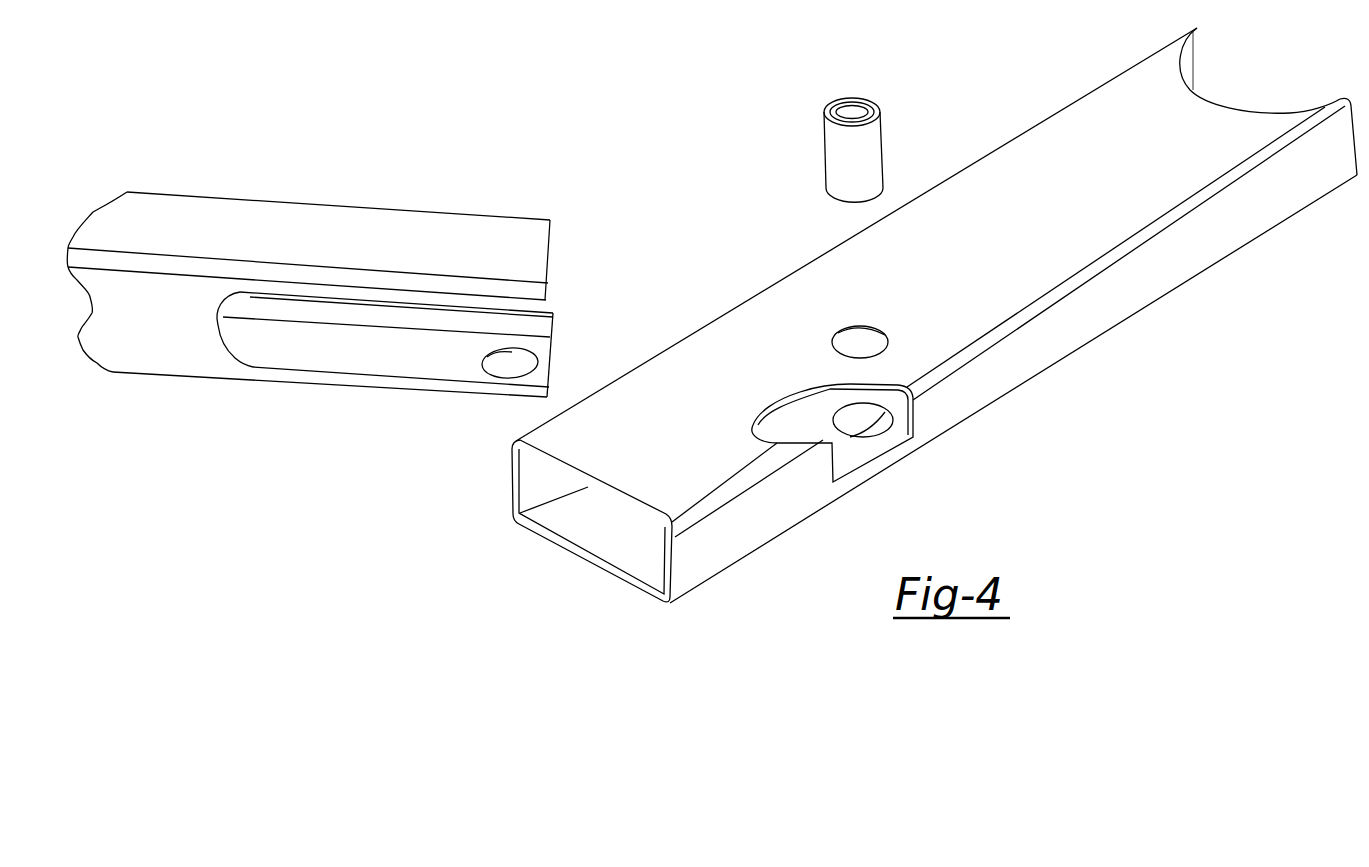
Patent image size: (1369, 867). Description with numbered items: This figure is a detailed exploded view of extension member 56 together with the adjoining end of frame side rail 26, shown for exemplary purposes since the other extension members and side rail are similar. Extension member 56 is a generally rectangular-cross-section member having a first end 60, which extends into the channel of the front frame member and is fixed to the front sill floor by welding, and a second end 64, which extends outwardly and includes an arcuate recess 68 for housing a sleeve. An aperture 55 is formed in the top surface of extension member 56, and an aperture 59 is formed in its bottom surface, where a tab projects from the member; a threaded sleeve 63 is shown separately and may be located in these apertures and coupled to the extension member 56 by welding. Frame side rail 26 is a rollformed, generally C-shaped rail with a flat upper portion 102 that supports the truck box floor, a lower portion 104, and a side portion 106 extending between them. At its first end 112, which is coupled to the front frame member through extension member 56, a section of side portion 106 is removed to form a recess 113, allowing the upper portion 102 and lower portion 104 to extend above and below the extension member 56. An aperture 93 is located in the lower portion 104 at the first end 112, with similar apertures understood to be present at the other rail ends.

The frame side rail 26 is at (173, 195).
The upper portion 102 is at (333, 223).
The first end 112 is at (435, 233).
The side portion 106 is at (113, 343).
The lower portion 104 is at (370, 357).
The recess 113 is at (223, 348).
The aperture 93 is at (497, 358).
The first end 60 is at (570, 452).
The extension member 56 is at (1043, 175).
The second end 64 is at (1135, 75).
The arcuate recess 68 is at (1216, 103).
The aperture 55 is at (843, 331).
The aperture 59 is at (852, 437).
The threaded sleeve 63 is at (878, 103).